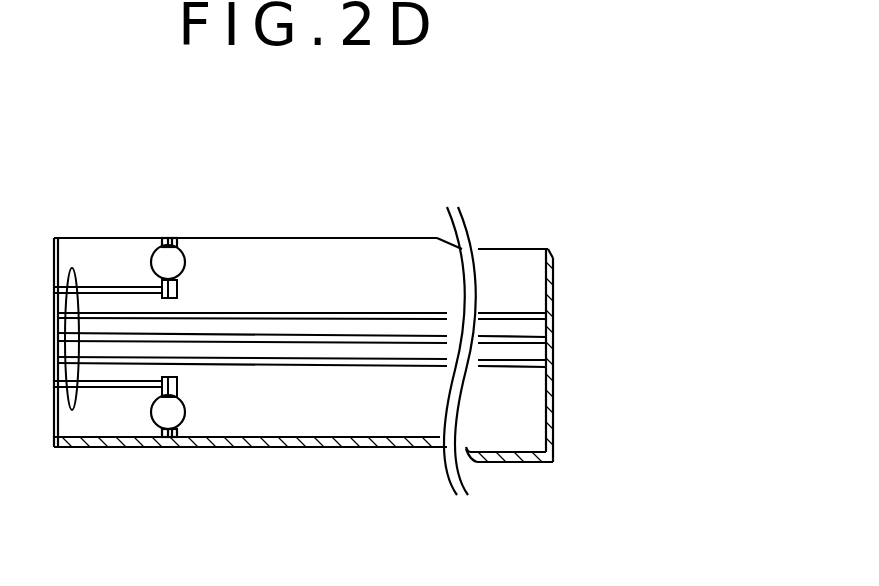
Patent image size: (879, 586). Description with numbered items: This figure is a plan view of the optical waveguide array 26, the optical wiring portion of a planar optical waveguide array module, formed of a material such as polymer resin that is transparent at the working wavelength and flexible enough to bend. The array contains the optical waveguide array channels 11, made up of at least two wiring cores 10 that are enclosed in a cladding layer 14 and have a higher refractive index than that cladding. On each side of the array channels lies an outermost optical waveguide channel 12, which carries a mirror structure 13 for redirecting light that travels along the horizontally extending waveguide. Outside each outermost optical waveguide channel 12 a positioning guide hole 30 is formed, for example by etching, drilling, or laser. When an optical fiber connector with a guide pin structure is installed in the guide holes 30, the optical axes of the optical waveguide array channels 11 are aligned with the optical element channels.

The wiring core 10 is at (327, 365).
The optical waveguide array channels 11 is at (70, 450).
The outermost optical waveguide channel 12 is at (118, 285).
The mirror structure 13 is at (177, 280).
The cladding layer 14 is at (395, 415).
The optical waveguide array 26 is at (522, 463).
The positioning guide hole 30 is at (170, 257).